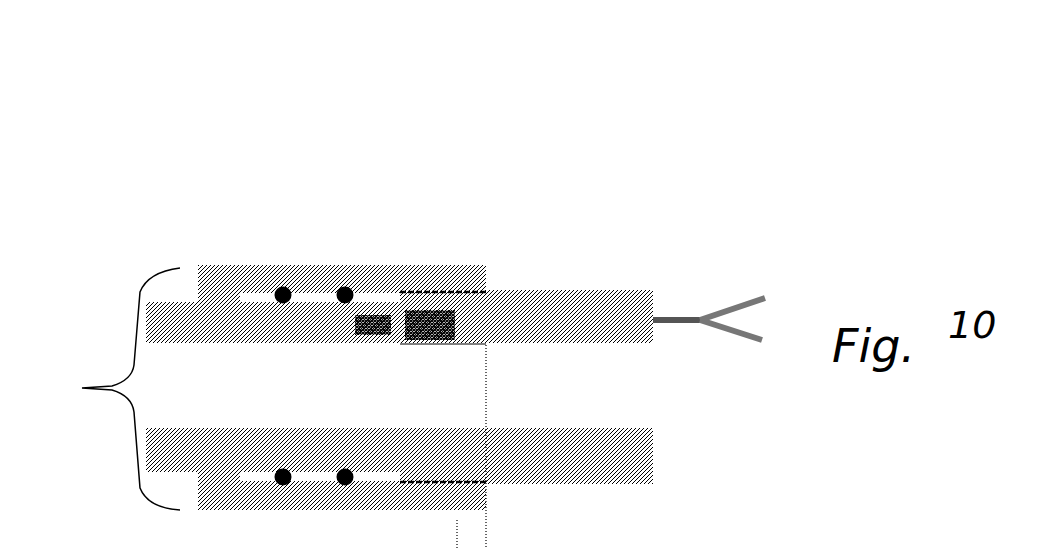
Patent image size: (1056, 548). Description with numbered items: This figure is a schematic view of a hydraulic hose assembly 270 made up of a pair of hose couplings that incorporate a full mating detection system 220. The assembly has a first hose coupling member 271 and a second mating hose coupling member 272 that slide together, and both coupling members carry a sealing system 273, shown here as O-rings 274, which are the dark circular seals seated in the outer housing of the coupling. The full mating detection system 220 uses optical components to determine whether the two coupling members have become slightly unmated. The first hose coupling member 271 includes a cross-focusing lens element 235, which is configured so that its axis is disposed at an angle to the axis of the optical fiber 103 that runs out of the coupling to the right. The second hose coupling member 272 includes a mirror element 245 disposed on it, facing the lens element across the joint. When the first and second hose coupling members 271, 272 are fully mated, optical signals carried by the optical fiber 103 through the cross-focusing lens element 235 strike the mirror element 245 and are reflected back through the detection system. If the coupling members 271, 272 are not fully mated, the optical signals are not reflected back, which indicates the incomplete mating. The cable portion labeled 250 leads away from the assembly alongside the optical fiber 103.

The hydraulic hose assembly 270 is at (160, 186).
The sealing system 273 is at (314, 250).
The O-rings 274 is at (281, 289).
The first hose coupling member 271 is at (400, 264).
The second mating hose coupling member 272 is at (277, 436).
The cross-focusing lens element 235 is at (400, 320).
The mirror element 245 is at (396, 322).
The full mating detection system 220 is at (404, 358).
The optical fiber 103 is at (673, 322).
The fiber optic cable 250 is at (716, 358).